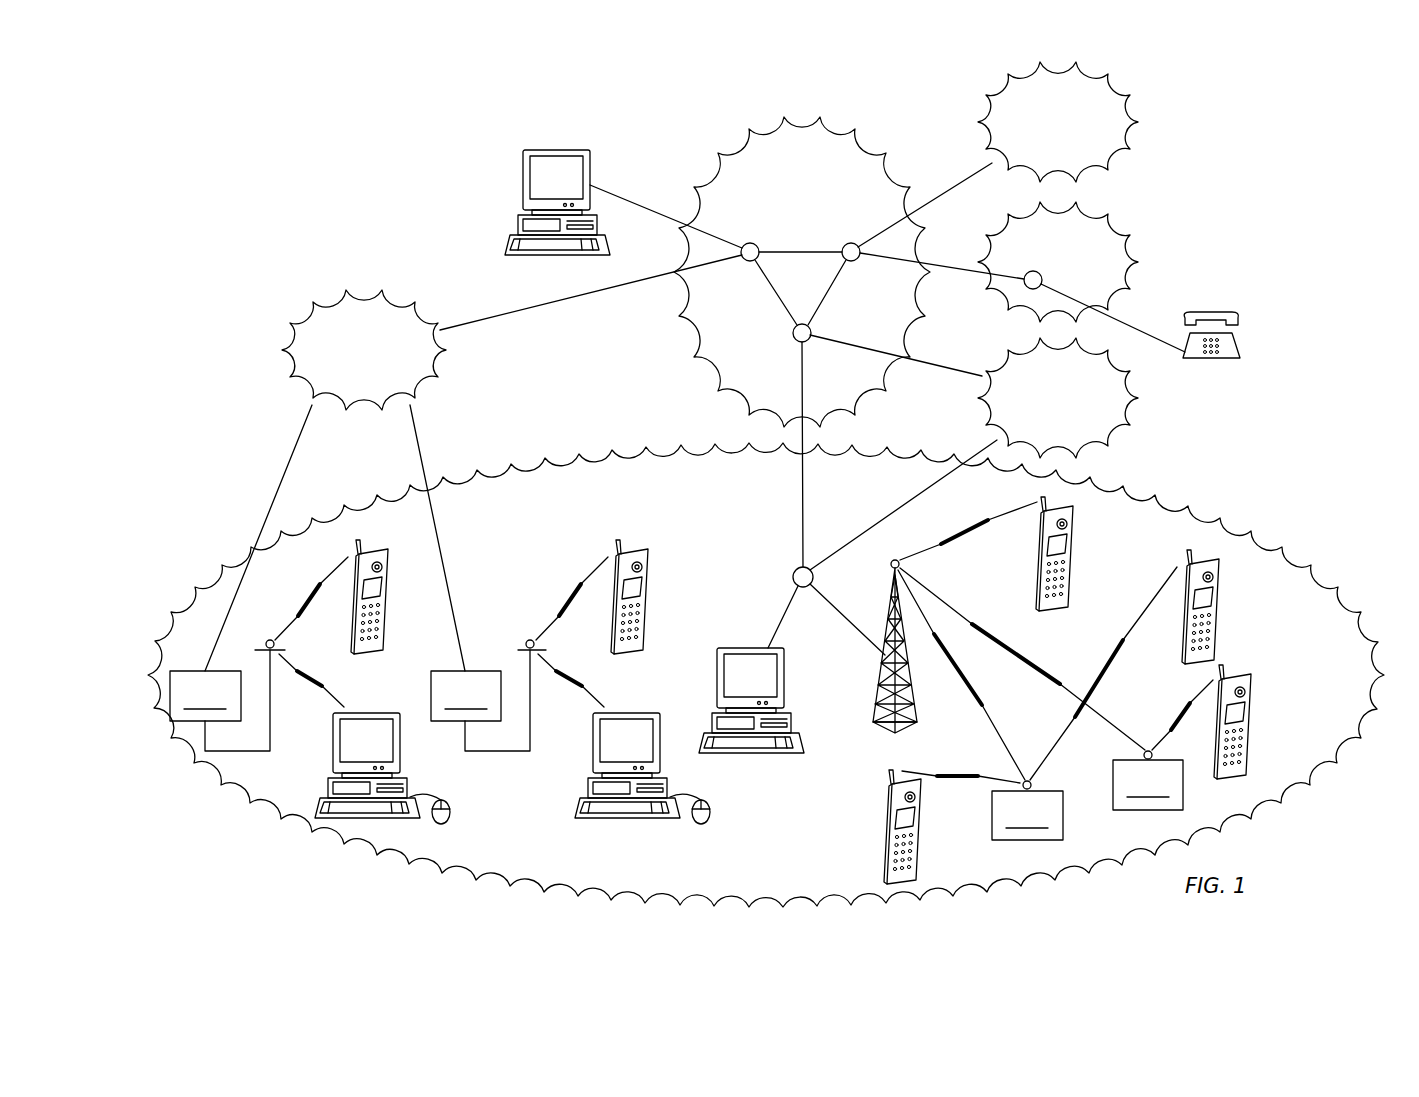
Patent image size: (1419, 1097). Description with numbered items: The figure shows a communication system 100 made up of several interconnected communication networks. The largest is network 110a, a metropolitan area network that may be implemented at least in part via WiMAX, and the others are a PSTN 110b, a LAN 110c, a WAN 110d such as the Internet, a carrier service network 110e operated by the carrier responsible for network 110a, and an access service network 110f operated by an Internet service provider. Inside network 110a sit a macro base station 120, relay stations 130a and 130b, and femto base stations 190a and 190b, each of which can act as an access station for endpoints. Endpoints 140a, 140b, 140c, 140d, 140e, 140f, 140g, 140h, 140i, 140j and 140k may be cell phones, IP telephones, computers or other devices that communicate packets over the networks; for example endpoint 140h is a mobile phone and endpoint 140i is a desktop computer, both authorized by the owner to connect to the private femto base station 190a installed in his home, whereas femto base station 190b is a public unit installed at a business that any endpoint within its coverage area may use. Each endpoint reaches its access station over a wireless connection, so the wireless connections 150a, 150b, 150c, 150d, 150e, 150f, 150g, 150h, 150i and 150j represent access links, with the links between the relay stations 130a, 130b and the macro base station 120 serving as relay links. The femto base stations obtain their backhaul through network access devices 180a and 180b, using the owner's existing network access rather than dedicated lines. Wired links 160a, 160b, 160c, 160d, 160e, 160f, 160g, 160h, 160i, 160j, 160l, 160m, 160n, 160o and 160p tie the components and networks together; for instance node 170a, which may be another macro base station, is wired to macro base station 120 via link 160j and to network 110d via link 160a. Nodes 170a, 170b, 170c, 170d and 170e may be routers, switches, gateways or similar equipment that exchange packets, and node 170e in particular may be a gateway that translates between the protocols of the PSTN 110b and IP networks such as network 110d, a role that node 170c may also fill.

The communication system 100 is at (407, 220).
The network 110a is at (599, 444).
The network 110b is at (1138, 230).
The network 110c is at (1142, 124).
The network 110d is at (736, 130).
The network 110e is at (1140, 402).
The network 110f is at (284, 338).
The macro base station 120 is at (878, 695).
The relay station 130a is at (1027, 810).
The relay station 130b is at (1148, 780).
The endpoint 140a is at (886, 848).
The endpoint 140b is at (1232, 590).
The endpoint 140c is at (1084, 535).
The endpoint 140d is at (1262, 705).
The endpoint 140e is at (556, 150).
The endpoint 140f is at (1211, 312).
The endpoint 140g is at (792, 724).
The endpoint 140h is at (383, 650).
The endpoint 140i is at (320, 783).
The endpoint 140j is at (580, 783).
The endpoint 140k is at (643, 650).
The wireless connection 150a is at (1180, 716).
The wireless connection 150b is at (1134, 628).
The wireless connection 150c is at (978, 530).
The wireless connection 150d is at (988, 720).
The wireless connection 150e is at (1054, 680).
The wireless connection 150f is at (966, 781).
The wireless connection 150g is at (314, 595).
The wireless connection 150h is at (312, 684).
The wireless connection 150i is at (572, 682).
The wireless connection 150j is at (580, 589).
The wired connection 160a is at (800, 518).
The wired link 160b is at (778, 296).
The wired link 160c is at (828, 296).
The wired link 160d is at (776, 628).
The wired link 160e is at (648, 207).
The wired link 160f is at (1150, 332).
The wired link 160g is at (953, 270).
The wired link 160h is at (930, 200).
The wired link 160i is at (805, 250).
The link 160j is at (846, 614).
The wired link 160l is at (942, 368).
The wired link 160m is at (866, 532).
The wired link 160n is at (422, 452).
The wired link 160o is at (592, 293).
The wired link 160p is at (291, 452).
The node 170a is at (793, 573).
The node 170b is at (794, 340).
The node 170c is at (748, 243).
The node 170d is at (854, 243).
The node 170e is at (1036, 270).
The network access device 180a is at (220, 700).
The network access device 180b is at (480, 700).
The femto base station 190a is at (284, 652).
The femto base station 190b is at (524, 646).